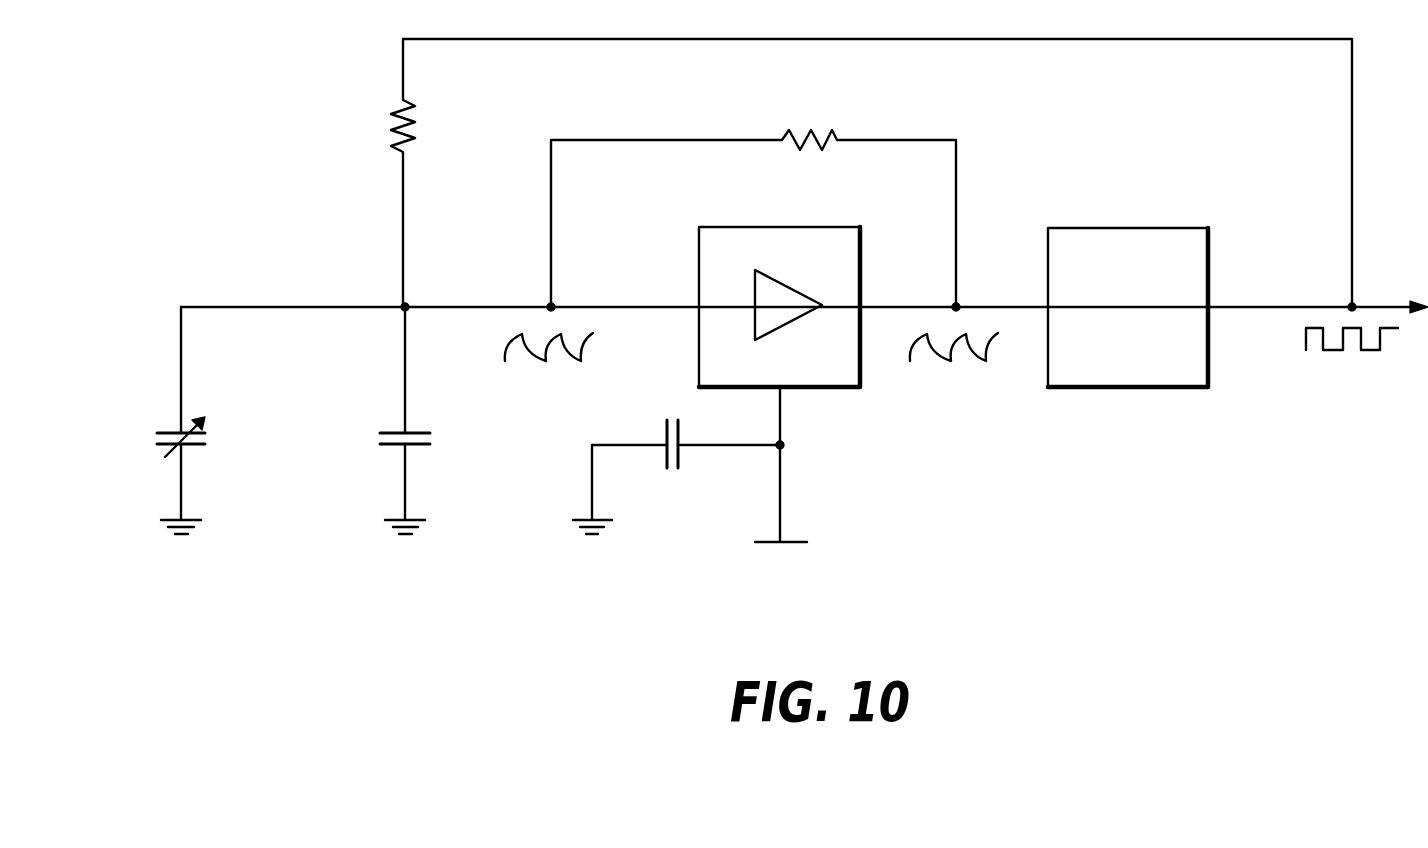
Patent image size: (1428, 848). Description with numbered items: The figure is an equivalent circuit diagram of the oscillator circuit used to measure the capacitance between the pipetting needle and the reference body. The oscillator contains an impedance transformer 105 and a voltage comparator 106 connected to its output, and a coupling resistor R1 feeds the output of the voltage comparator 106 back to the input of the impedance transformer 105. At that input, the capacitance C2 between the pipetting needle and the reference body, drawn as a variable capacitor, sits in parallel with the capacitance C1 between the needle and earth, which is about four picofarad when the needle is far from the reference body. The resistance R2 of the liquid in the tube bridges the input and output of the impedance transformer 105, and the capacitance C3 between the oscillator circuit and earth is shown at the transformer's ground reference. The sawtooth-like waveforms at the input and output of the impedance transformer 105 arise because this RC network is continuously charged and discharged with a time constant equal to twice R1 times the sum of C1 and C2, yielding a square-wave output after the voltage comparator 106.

The coupling resistor R1 is at (390, 110).
The electrical resistance of the liquid in the tube R2 is at (800, 128).
The capacitance between the pipetting needle and earth C1 is at (410, 447).
The capacitance between the pipetting needle and the reference body C2 is at (162, 448).
The capacitance between the oscillator circuit and earth C3 is at (665, 432).
The impedance transformer 105 is at (810, 243).
The voltage comparator 106 is at (1127, 240).